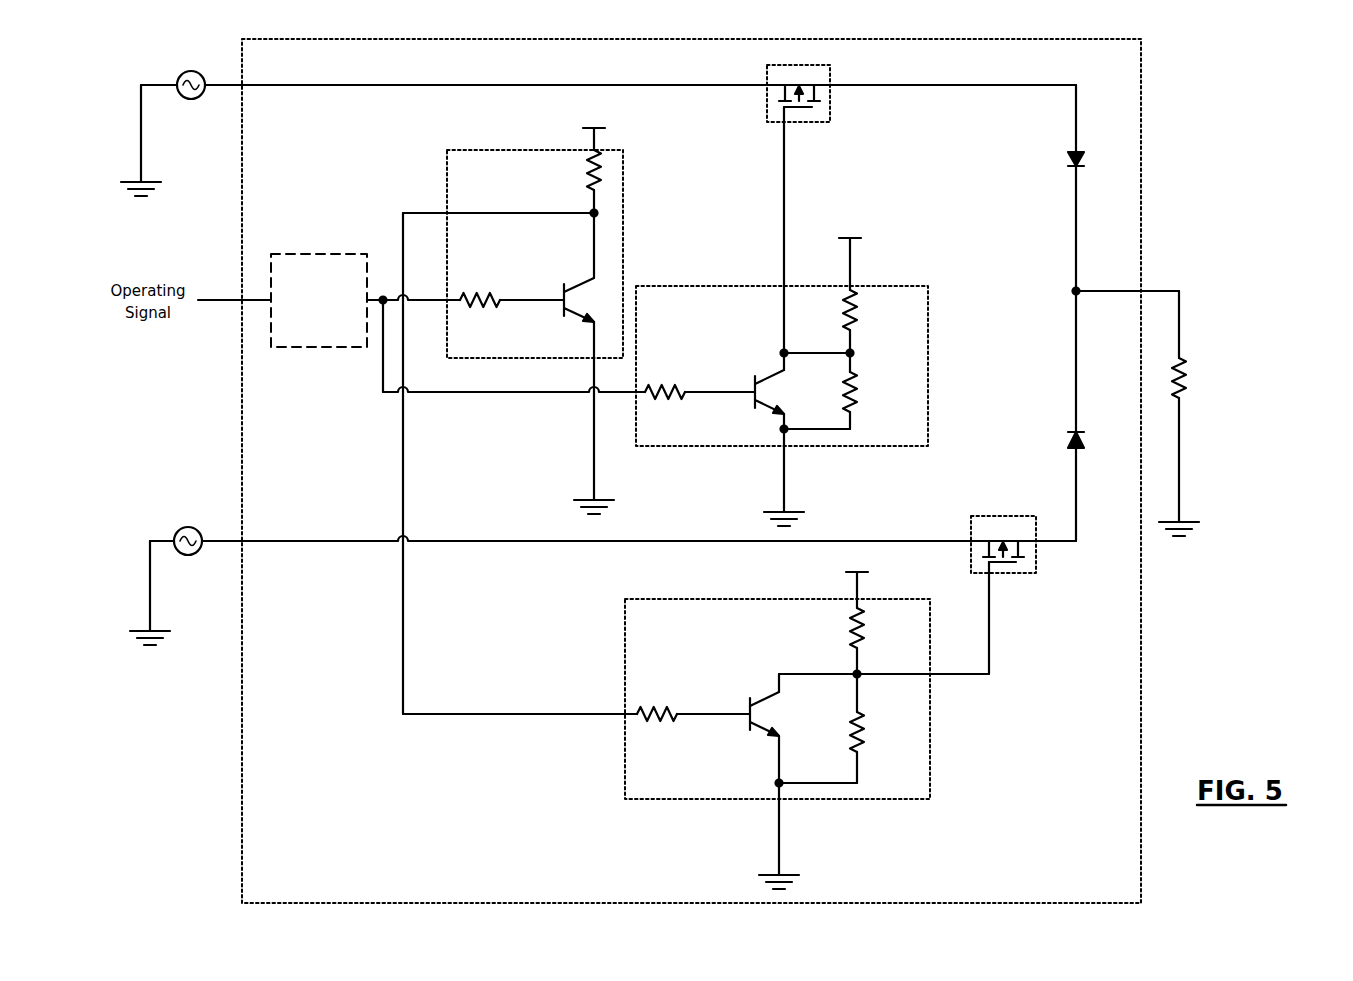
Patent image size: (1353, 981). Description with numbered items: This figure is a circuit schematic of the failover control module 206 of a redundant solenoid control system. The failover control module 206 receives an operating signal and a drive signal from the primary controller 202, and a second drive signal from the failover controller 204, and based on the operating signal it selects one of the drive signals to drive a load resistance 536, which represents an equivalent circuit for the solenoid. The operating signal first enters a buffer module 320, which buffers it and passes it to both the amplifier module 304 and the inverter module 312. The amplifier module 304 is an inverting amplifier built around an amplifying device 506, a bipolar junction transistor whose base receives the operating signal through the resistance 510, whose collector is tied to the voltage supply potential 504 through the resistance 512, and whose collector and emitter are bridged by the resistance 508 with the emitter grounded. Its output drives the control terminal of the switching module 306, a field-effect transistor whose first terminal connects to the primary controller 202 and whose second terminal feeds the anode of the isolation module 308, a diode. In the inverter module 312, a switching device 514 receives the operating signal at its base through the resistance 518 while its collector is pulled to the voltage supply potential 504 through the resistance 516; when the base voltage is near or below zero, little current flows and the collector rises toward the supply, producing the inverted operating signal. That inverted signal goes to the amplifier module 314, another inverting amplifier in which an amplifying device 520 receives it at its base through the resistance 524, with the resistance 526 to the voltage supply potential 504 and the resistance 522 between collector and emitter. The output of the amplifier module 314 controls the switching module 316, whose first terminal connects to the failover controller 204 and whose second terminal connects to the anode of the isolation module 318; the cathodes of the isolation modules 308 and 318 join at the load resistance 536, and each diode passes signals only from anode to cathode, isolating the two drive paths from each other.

The primary controller 202 is at (194, 99).
The failover controller 204 is at (190, 527).
The failover control module 206 is at (1141, 115).
The amplifier module 304 is at (928, 311).
The switching module 306 is at (815, 122).
The isolation module 308 is at (1068, 158).
The inverter module 312 is at (623, 191).
The amplifier module 314 is at (930, 725).
The switching module 316 is at (1017, 576).
The isolation module 318 is at (1068, 443).
The buffer module 320 is at (285, 254).
The voltage supply potential 504 is at (592, 129).
The amplifying device 506 is at (760, 406).
The resistance 508 is at (858, 382).
The resistance 510 is at (659, 385).
The resistance 512 is at (858, 316).
The switching device 514 is at (575, 318).
The resistance 516 is at (590, 183).
The resistance 518 is at (474, 295).
The amplifying device 520 is at (755, 731).
The resistance 522 is at (866, 730).
The resistance 524 is at (652, 708).
The resistance 526 is at (866, 626).
The load resistance 536 is at (1189, 364).